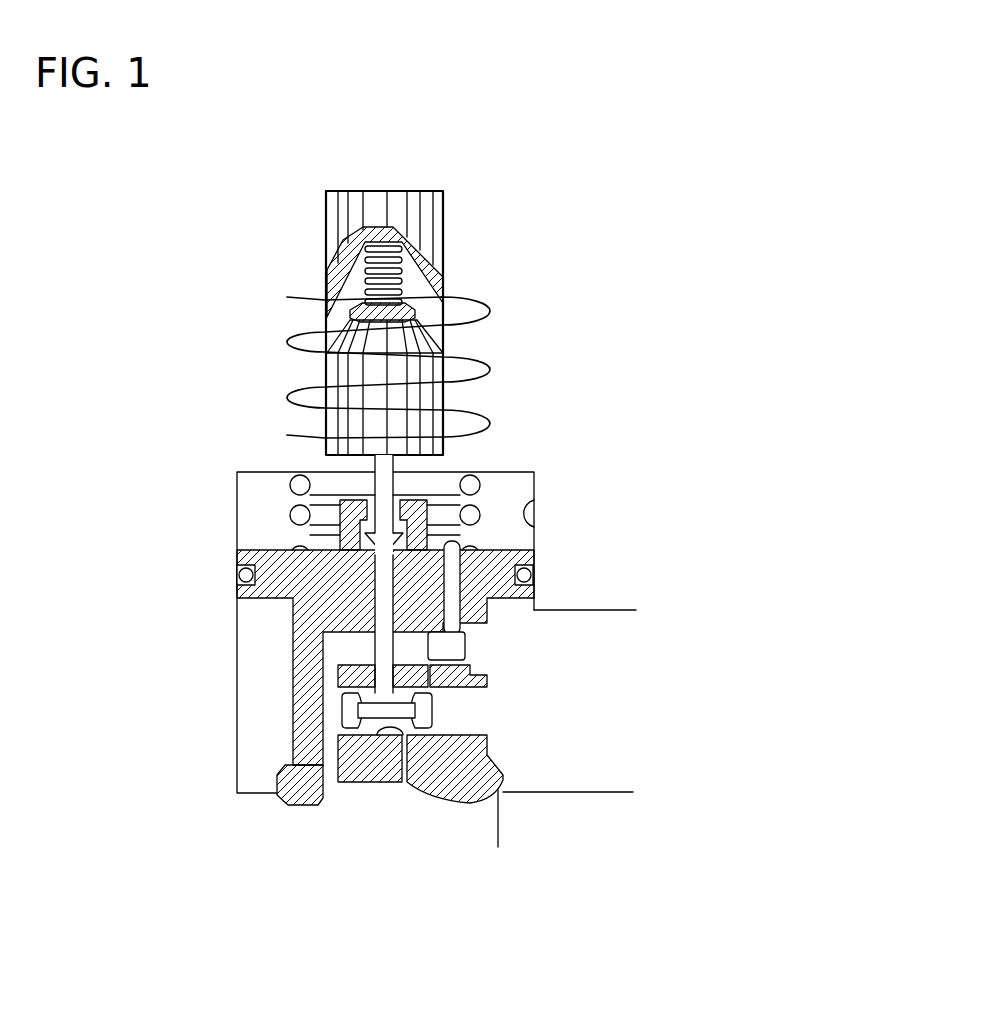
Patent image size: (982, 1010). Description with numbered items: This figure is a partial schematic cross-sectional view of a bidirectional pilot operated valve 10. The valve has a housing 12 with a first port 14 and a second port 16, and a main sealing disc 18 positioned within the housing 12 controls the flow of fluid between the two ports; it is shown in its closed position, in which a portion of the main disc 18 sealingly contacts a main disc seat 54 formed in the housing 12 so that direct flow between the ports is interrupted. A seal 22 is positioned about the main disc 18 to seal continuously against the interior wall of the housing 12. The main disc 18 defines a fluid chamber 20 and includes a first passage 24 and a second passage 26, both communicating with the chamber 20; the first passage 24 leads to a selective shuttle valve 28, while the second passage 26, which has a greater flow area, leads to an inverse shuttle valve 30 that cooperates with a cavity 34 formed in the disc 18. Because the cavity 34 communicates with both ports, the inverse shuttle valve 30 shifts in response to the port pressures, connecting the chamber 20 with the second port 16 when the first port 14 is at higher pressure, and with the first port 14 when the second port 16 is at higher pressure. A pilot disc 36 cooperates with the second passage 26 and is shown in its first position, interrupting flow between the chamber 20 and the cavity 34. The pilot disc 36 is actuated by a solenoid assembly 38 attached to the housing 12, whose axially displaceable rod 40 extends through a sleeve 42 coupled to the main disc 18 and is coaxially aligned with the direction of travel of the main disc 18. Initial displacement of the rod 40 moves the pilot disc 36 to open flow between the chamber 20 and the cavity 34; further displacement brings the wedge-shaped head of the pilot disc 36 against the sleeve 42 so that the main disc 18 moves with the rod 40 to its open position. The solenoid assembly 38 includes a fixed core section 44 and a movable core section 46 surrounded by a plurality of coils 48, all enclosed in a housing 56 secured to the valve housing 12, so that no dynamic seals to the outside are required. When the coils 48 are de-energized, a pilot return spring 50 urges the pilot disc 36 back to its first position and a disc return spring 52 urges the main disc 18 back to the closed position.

The bidirectional pilot operated valve 10 is at (668, 105).
The housing 12 is at (235, 522).
The first port 14 is at (600, 792).
The second port 16 is at (497, 824).
The main sealing disc 18 is at (290, 690).
The fluid chamber 20 is at (537, 527).
The seal 22 is at (527, 570).
The first passage 24 is at (450, 603).
The second passage 26 is at (376, 605).
The selective shuttle valve 28 is at (467, 641).
The inverse shuttle valve 30 is at (438, 700).
The cavity 34 is at (397, 782).
The pilot disc 36 is at (403, 553).
The solenoid assembly 38 is at (297, 208).
The rod 40 is at (393, 490).
The sleeve 42 is at (342, 500).
The fixed core section 44 is at (443, 240).
The movable core section 46 is at (467, 410).
The coils 48 is at (491, 313).
The pilot return spring 50 is at (340, 267).
The disc return spring 52 is at (293, 485).
The main disc seat 54 is at (277, 793).
The housing 56 is at (326, 314).